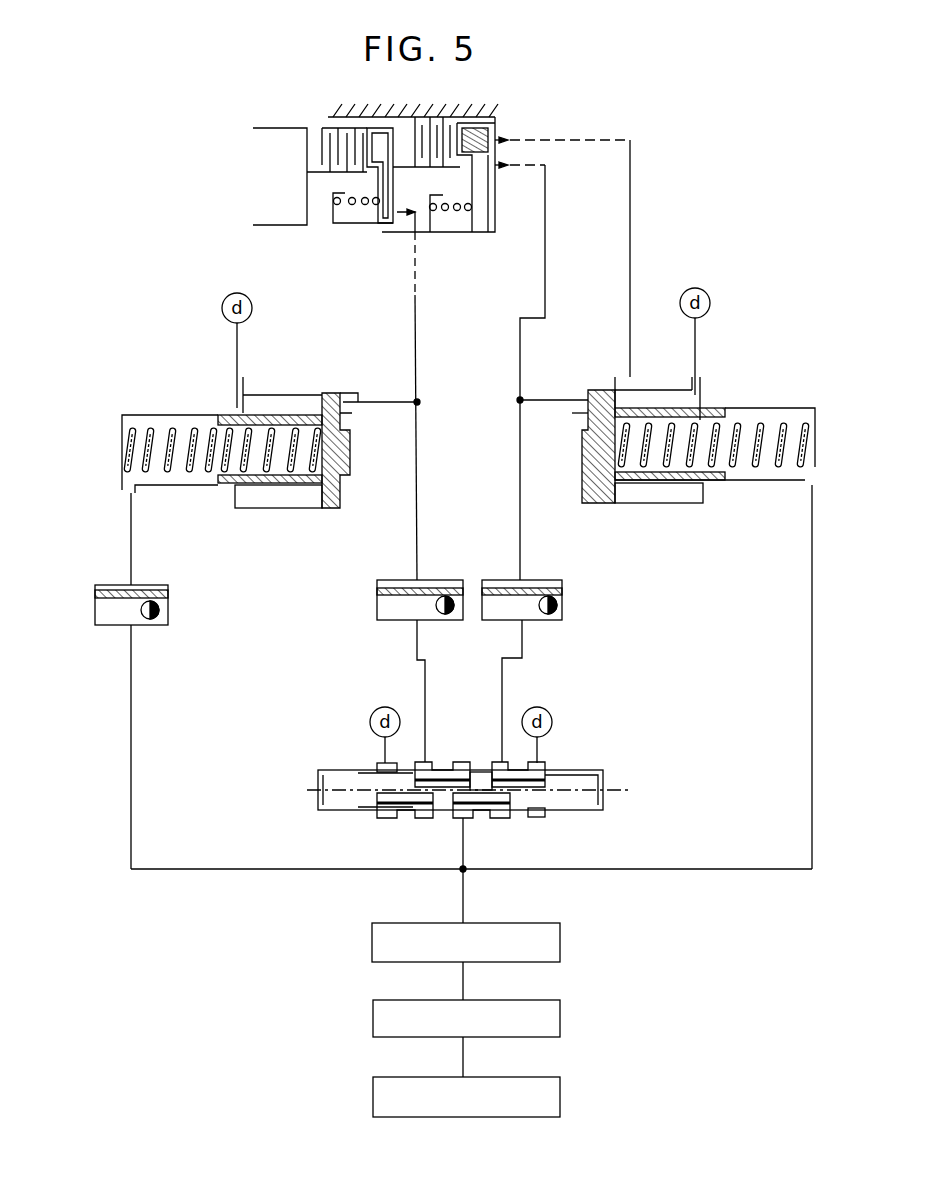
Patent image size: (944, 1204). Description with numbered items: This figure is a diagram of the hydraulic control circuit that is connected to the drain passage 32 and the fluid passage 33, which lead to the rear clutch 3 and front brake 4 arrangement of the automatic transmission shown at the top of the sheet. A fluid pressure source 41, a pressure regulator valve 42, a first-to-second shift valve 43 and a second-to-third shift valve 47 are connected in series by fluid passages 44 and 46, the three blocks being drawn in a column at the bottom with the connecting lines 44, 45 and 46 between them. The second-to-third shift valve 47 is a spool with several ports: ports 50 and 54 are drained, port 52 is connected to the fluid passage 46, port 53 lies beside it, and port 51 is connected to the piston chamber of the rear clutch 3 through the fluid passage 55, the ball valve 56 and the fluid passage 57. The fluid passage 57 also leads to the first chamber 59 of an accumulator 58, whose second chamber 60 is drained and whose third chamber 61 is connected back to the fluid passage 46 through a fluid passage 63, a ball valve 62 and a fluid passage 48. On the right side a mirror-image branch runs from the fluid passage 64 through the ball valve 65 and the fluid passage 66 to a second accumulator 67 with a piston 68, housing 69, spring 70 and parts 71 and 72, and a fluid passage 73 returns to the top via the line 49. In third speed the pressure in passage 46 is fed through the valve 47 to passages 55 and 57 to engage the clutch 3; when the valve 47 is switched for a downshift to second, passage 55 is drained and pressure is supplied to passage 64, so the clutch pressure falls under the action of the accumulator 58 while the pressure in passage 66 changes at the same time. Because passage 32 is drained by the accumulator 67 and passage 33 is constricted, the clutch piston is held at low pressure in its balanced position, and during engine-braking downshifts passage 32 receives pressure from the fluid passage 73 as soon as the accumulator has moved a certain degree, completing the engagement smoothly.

The rear clutch 3 is at (350, 128).
The front brake 4 is at (447, 117).
The drain passage 32 is at (537, 140).
The fluid passage 33 is at (518, 165).
The fluid pressure source 41 is at (561, 1096).
The pressure regulator valve 42 is at (561, 1018).
The 1-2 shift valve 43 is at (561, 940).
The fluid passage 44 is at (466, 1056).
The connecting line 45 is at (466, 978).
The fluid passage 46 is at (466, 892).
The 2-3 shift valve 47 is at (586, 810).
The fluid passage 48 is at (254, 868).
The conduit 49 is at (684, 869).
The port 50 is at (377, 764).
The port 51 is at (417, 764).
The port 52 is at (462, 762).
The port 53 is at (505, 760).
The port 54 is at (548, 762).
The fluid passage 55 is at (427, 676).
The ball valve 56 is at (377, 615).
The fluid passage 57 is at (418, 434).
The accumulator 58 is at (256, 508).
The first chamber 59 is at (362, 393).
The second chamber 60 is at (302, 398).
The third chamber 61 is at (158, 418).
The ball valve 62 is at (168, 612).
The fluid passage 63 is at (133, 540).
The fluid passage 64 is at (524, 652).
The check valve 65 is at (562, 608).
The fluid passage 66 is at (522, 482).
The accumulator 67 is at (683, 503).
The piston 68 is at (582, 392).
The spring housing 69 is at (665, 396).
The spring 70 is at (772, 415).
The conduit 71 is at (628, 378).
The stop 72 is at (703, 378).
The fluid passage 73 is at (632, 232).